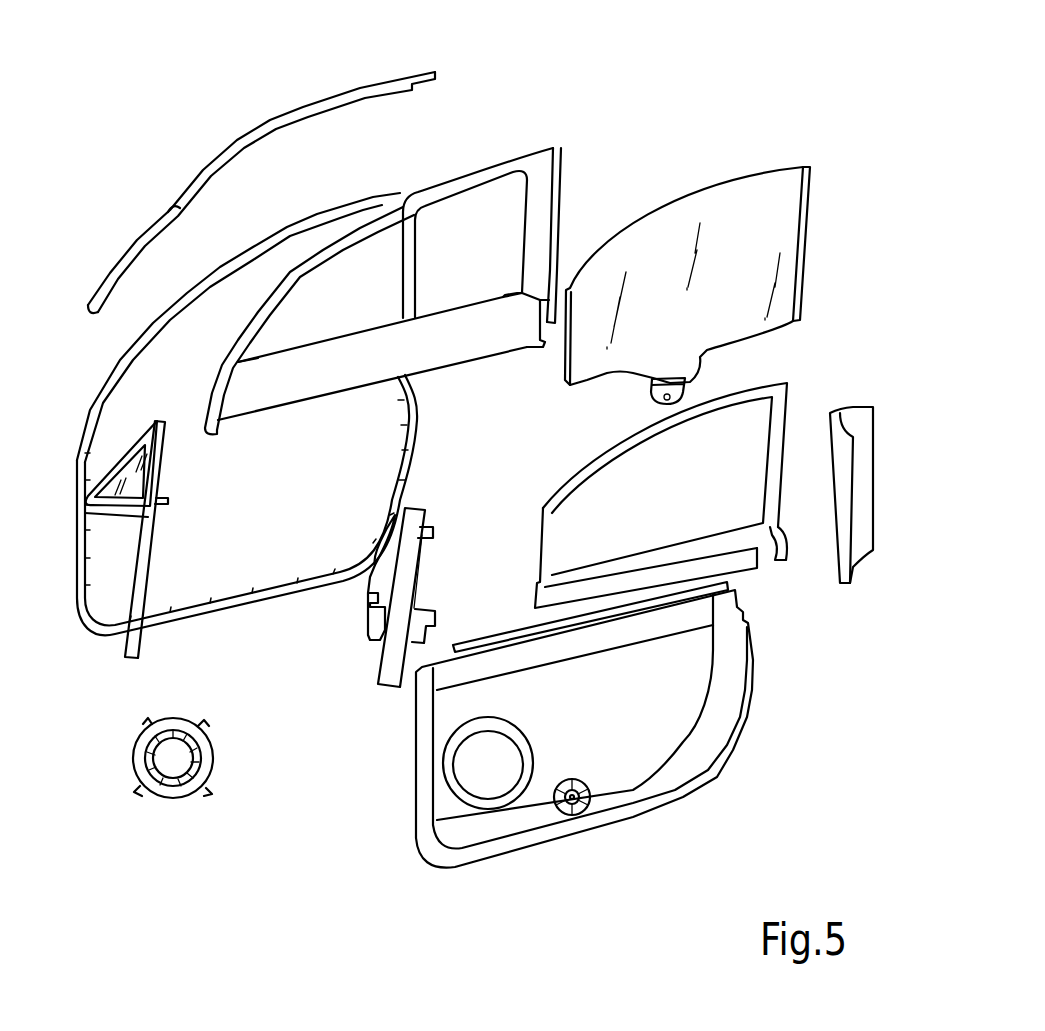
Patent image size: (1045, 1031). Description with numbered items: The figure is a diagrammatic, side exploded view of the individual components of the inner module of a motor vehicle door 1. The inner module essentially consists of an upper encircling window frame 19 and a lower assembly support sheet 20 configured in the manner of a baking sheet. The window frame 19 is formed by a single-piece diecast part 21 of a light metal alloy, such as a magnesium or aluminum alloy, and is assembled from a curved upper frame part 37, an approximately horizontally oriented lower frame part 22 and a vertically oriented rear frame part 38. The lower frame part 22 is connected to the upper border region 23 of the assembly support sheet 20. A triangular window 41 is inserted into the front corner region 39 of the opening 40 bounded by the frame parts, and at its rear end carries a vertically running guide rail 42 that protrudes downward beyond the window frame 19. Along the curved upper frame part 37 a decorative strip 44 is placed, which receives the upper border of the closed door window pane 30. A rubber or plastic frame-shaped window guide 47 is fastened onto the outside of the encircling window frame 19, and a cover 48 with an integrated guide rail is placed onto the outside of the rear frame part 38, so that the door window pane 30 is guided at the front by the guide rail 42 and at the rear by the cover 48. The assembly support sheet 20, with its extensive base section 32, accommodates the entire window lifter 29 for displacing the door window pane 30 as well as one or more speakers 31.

The motor vehicle door 1 is at (723, 83).
The window frame 19 is at (507, 140).
The assembly support sheet 20 is at (740, 753).
The diecast part 21 is at (537, 172).
The lower frame part 22 is at (453, 333).
The upper border region 23 is at (673, 610).
The window lifter 29 is at (421, 580).
The door window pane 30 is at (806, 228).
The speaker 31 is at (130, 757).
The base section 32 is at (633, 763).
The upper frame part 37 is at (362, 220).
The rear frame part 38 is at (541, 240).
The front corner region 39 is at (272, 330).
The opening 40 is at (453, 220).
The triangular window 41 is at (116, 518).
The guide rail 42 is at (150, 556).
The decorative strip 44 is at (237, 142).
The window guide 47 is at (790, 380).
The cover 48 is at (867, 490).